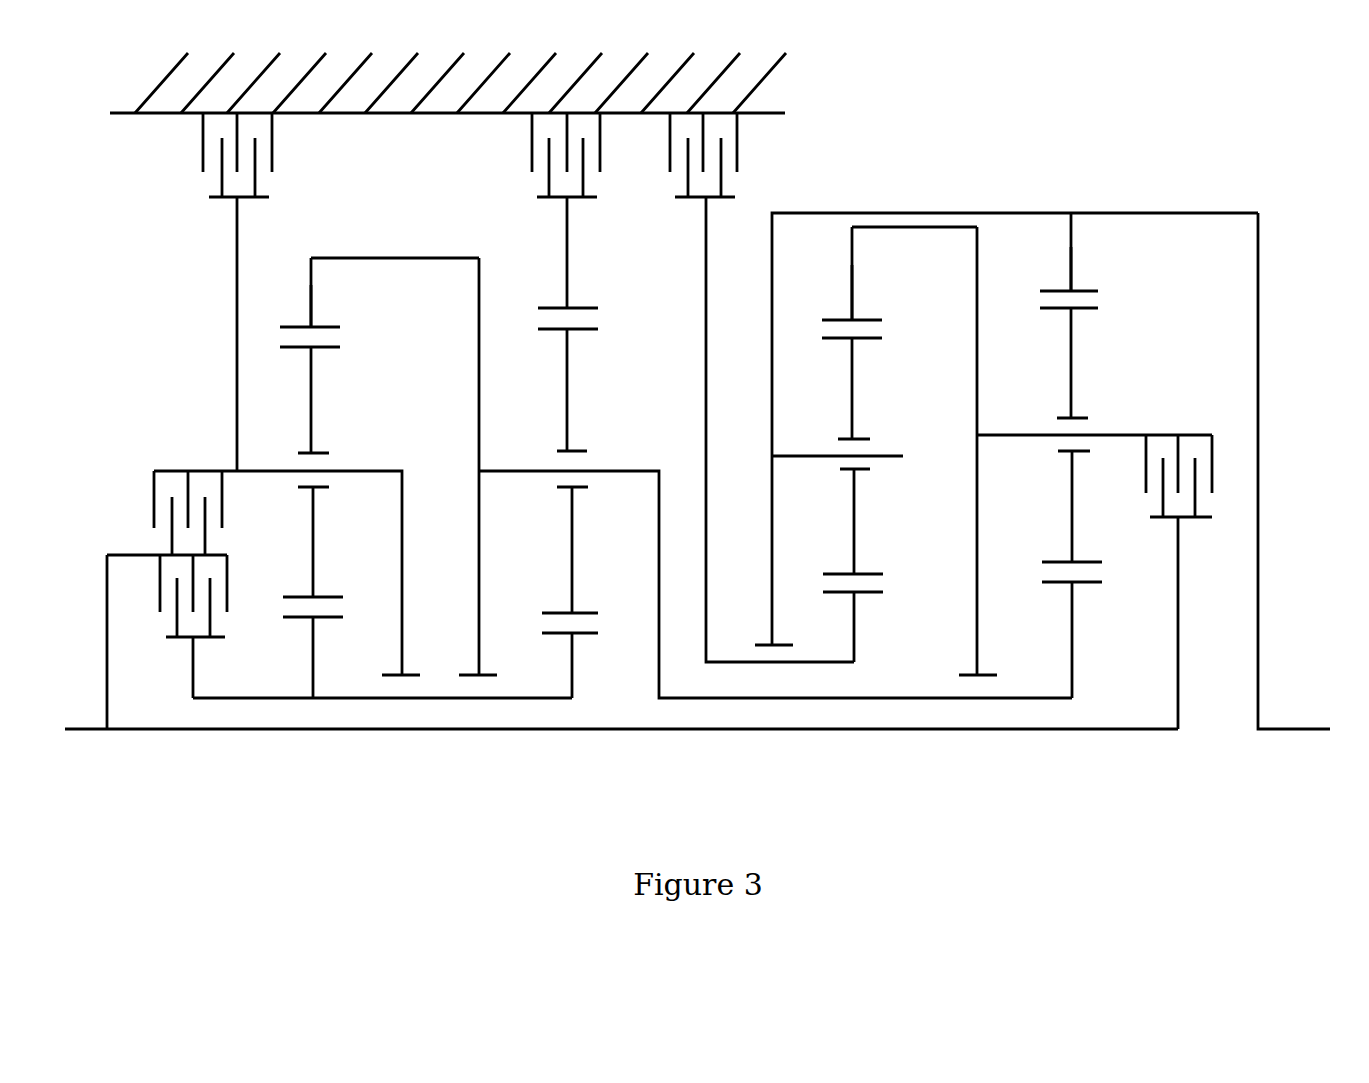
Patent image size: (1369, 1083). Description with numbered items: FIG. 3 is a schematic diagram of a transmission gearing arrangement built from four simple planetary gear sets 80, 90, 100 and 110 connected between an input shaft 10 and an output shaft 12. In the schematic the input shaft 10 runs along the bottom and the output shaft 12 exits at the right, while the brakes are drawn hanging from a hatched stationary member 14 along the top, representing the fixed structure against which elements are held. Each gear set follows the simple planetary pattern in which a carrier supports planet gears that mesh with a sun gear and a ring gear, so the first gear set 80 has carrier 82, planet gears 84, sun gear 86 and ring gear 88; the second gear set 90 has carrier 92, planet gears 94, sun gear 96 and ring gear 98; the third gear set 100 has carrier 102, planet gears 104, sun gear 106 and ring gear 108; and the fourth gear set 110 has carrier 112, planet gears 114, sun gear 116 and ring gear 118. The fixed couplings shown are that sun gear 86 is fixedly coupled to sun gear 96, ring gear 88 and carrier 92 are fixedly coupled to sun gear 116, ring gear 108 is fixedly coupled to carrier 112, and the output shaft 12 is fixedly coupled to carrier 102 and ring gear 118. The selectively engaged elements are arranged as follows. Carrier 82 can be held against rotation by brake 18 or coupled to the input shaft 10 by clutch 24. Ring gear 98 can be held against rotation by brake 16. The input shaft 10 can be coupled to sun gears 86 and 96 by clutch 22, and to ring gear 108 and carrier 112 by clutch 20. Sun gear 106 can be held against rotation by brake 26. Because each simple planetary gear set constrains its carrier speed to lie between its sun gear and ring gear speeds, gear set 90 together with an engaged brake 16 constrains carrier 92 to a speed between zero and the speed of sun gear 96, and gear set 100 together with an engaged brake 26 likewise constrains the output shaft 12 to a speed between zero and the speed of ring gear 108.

The input shaft 10 is at (87, 730).
The output shaft 12 is at (1312, 730).
The transmission housing 14 is at (173, 68).
The brake 16 is at (531, 155).
The brake 18 is at (272, 147).
The clutch 20 is at (1195, 435).
The clutch 22 is at (160, 580).
The clutch 24 is at (153, 497).
The brake 26 is at (737, 147).
The planetary gear set 80 is at (363, 630).
The carrier 82 is at (235, 415).
The ring gear 84 is at (313, 415).
The sun gear 86 is at (313, 670).
The ring gear 88 is at (310, 285).
The planetary gear set 90 is at (775, 630).
The carrier 92 is at (479, 315).
The ring gear 94 is at (572, 402).
The sun gear 96 is at (572, 657).
The ring gear 98 is at (567, 267).
The planetary gear set 100 is at (1006, 500).
The carrier 102 is at (771, 422).
The ring gear 104 is at (852, 393).
The sun gear 106 is at (854, 638).
The ring gear 108 is at (852, 265).
The planetary gear set 110 is at (1094, 612).
The carrier 112 is at (977, 323).
The ring gear 114 is at (1071, 378).
The sun gear 116 is at (1072, 630).
The ring gear 118 is at (1071, 247).